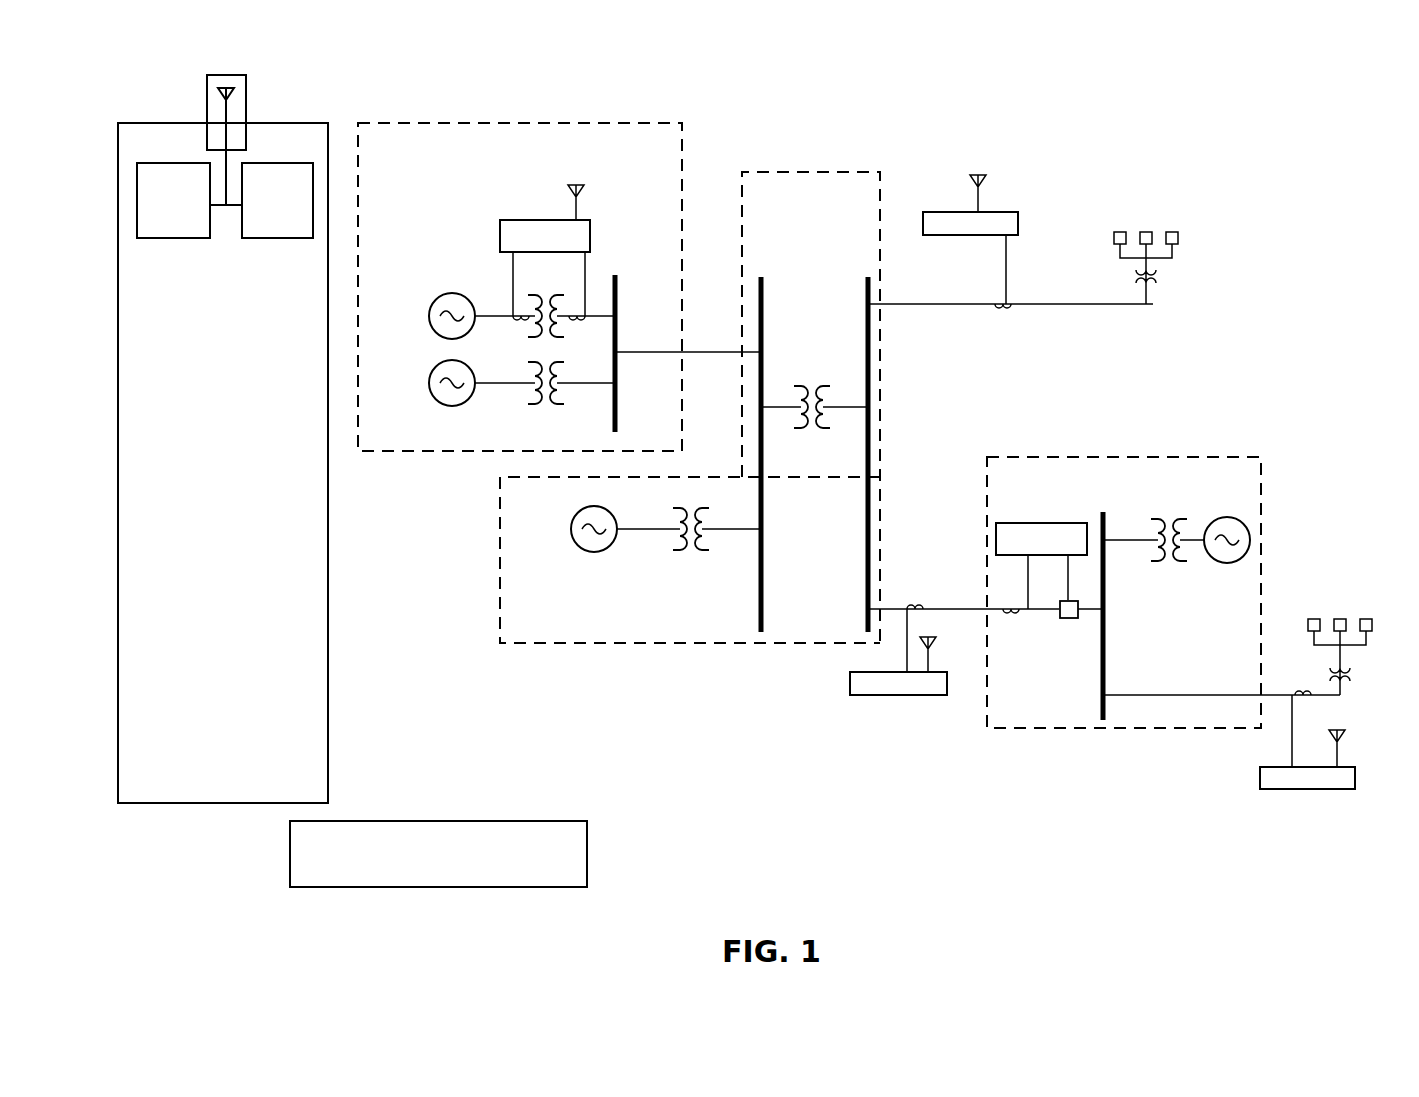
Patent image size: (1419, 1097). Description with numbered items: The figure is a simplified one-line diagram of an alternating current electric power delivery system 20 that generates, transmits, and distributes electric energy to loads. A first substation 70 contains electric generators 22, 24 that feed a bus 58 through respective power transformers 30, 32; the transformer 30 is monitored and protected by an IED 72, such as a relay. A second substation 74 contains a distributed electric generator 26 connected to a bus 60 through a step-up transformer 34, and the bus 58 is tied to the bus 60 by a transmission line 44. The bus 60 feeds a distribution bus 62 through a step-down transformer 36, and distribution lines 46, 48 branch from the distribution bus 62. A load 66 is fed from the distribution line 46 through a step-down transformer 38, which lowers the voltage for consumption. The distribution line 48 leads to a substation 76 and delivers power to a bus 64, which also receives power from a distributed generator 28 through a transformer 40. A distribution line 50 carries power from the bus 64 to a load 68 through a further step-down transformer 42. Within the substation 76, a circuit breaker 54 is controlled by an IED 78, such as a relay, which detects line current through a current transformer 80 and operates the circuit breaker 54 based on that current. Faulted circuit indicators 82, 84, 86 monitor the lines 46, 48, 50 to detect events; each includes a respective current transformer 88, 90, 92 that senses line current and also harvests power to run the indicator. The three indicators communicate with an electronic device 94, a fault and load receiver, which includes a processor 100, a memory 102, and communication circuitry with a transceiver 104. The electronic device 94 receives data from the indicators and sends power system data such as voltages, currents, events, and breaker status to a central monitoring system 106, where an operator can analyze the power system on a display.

The electric power delivery system 20 is at (1203, 150).
The electric generator 22 is at (429, 312).
The electric generator 24 is at (429, 382).
The electric generator 26 is at (571, 527).
The distributed generator 28 is at (1215, 561).
The power transformer 30 is at (535, 328).
The power transformer 32 is at (548, 405).
The step-up transformer 34 is at (675, 542).
The step-down transformer 36 is at (808, 386).
The step-down transformer 38 is at (1162, 278).
The power transformer 40 is at (1162, 519).
The step-down transformer 42 is at (1352, 678).
The transmission line 44 is at (683, 352).
The distribution line 46 is at (912, 305).
The distribution line 48 is at (951, 611).
The distribution line 50 is at (1195, 693).
The circuit breaker 54 is at (1068, 619).
The bus 58 is at (618, 410).
The bus 60 is at (763, 493).
The distribution bus 62 is at (866, 597).
The bus 64 is at (1103, 684).
The load 66 is at (1180, 236).
The load 68 is at (1338, 619).
The first substation 70 is at (472, 123).
The IED 72 is at (527, 222).
The second substation 74 is at (500, 525).
The substation 76 is at (1122, 728).
The IED 78 is at (1030, 523).
The current transformer 80 is at (1020, 613).
The faulted circuit indicator 82 is at (940, 212).
The faulted circuit indicator 84 is at (850, 686).
The faulted circuit indicator 86 is at (1343, 790).
The current transformer 88 is at (997, 309).
The current transformer 90 is at (913, 605).
The current transformer 92 is at (1298, 692).
The electronic device 94 is at (328, 563).
The processor 100 is at (150, 163).
The memory 102 is at (290, 163).
The transceiver 104 is at (230, 95).
The central monitoring system 106 is at (480, 821).